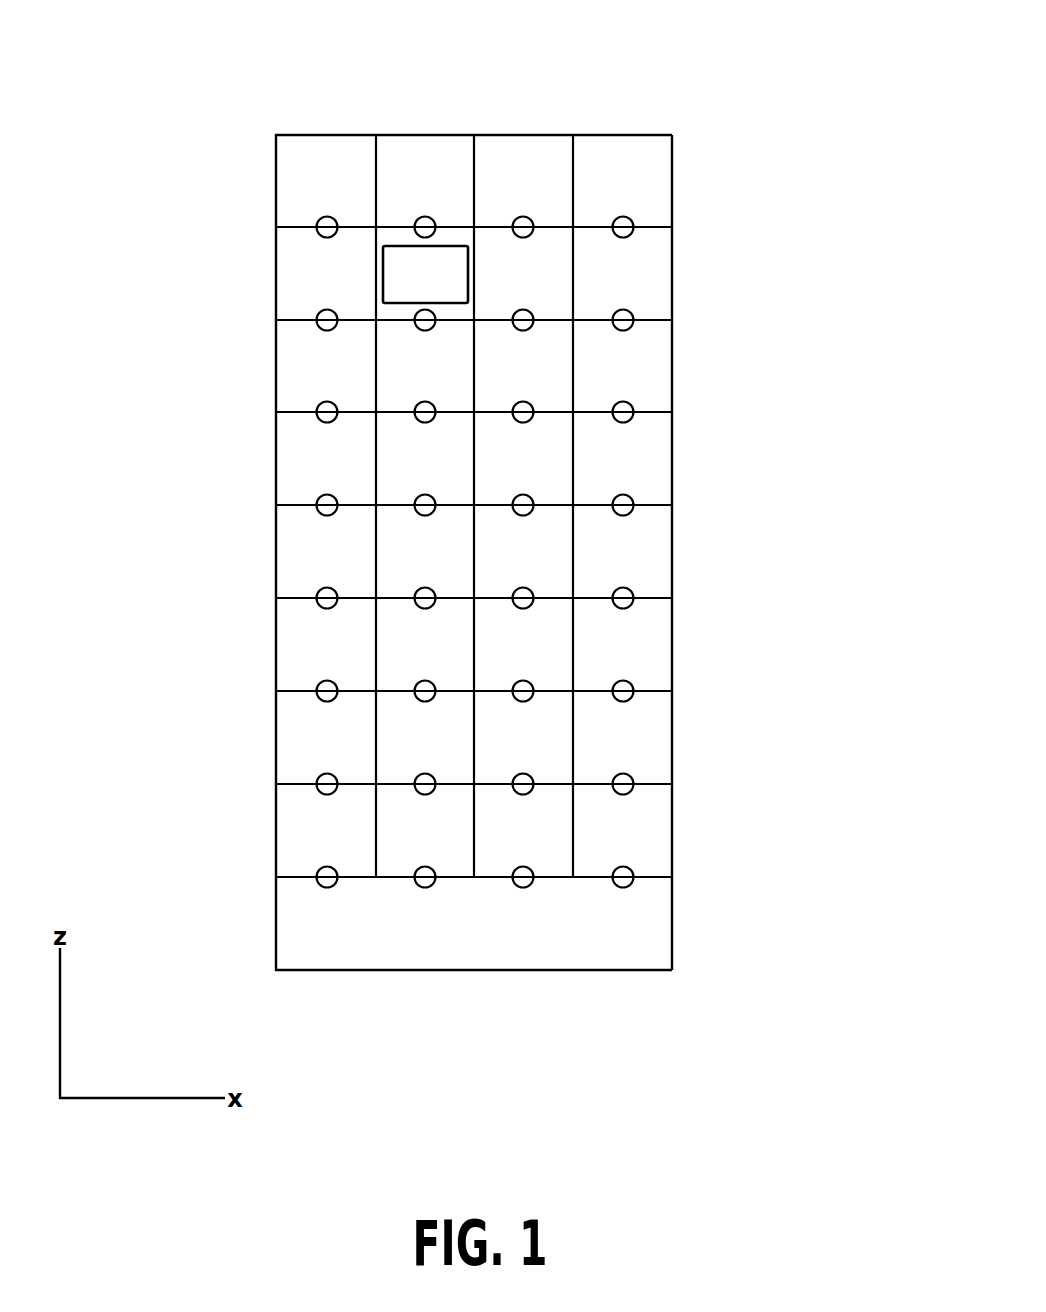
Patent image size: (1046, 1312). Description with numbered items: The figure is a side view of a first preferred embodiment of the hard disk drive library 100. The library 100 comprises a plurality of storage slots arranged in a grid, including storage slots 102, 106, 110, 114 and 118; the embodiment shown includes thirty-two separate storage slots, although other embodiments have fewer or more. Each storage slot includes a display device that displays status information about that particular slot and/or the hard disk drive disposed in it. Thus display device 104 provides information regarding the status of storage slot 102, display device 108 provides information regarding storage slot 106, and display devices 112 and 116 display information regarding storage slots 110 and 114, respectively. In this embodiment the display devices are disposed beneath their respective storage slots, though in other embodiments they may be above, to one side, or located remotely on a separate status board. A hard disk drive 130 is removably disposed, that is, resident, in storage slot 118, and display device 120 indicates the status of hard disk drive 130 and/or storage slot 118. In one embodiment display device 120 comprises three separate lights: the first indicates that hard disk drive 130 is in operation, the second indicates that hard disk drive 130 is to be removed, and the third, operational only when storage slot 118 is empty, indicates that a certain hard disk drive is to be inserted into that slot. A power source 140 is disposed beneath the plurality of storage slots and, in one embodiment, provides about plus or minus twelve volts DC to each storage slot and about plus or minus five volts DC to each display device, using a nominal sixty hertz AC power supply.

The hard disk drive library 100 is at (585, 970).
The storage slot 102 is at (287, 152).
The display device 104 is at (327, 214).
The storage slot 106 is at (385, 152).
The display device 108 is at (425, 214).
The storage slot 110 is at (483, 152).
The display device 112 is at (523, 214).
The storage slot 114 is at (582, 152).
The display device 116 is at (623, 214).
The storage slot 118 is at (393, 315).
The display device 120 is at (417, 327).
The hard disk drive 130 is at (413, 272).
The power source 140 is at (297, 931).